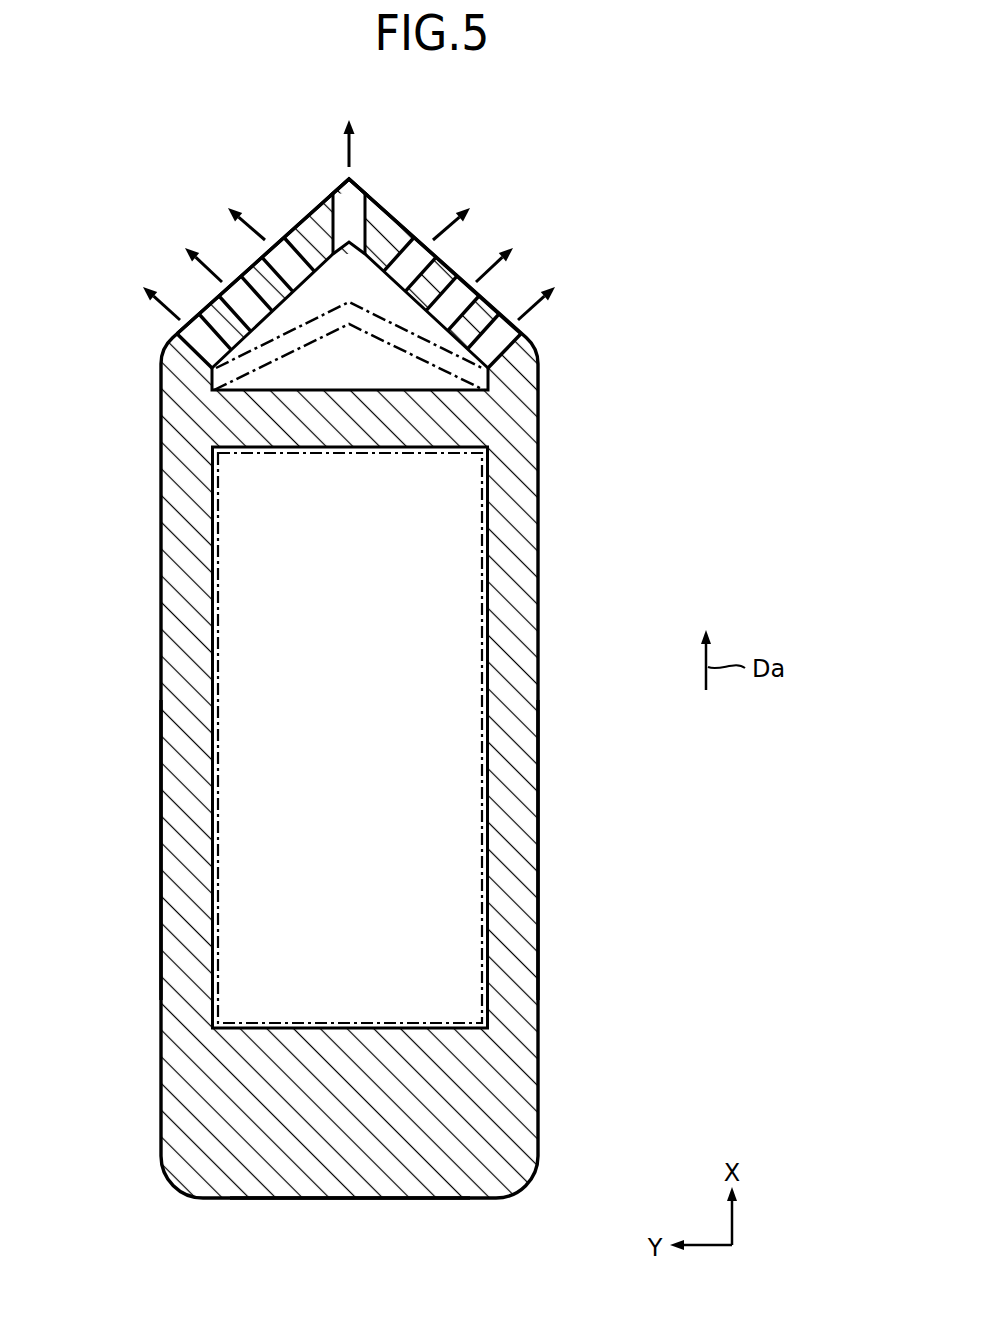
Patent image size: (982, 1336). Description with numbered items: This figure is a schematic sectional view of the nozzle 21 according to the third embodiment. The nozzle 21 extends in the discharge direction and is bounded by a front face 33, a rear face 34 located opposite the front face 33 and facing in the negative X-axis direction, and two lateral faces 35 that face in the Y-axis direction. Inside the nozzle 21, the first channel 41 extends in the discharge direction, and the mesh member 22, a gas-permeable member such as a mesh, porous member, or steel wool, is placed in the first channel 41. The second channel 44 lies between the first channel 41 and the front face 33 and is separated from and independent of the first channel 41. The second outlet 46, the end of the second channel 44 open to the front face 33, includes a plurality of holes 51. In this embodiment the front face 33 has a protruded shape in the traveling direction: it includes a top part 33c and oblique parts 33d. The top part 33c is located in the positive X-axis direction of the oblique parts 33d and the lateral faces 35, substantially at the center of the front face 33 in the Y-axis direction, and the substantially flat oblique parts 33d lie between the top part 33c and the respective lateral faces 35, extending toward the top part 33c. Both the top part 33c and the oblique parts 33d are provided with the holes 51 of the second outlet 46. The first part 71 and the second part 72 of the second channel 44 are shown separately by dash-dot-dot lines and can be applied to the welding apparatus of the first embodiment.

The nozzle 21 is at (172, 618).
The mesh member 22 is at (217, 677).
The front face 33 is at (396, 203).
The top part 33c is at (348, 177).
The oblique parts 33d is at (250, 267).
The rear face 34 is at (346, 1200).
The lateral faces 35 is at (162, 837).
The first channel 41 is at (457, 595).
The second channel 44 is at (330, 265).
The second outlet 46 is at (322, 219).
The holes 51 is at (350, 177).
The first part 71 is at (430, 366).
The second part 72 is at (434, 322).